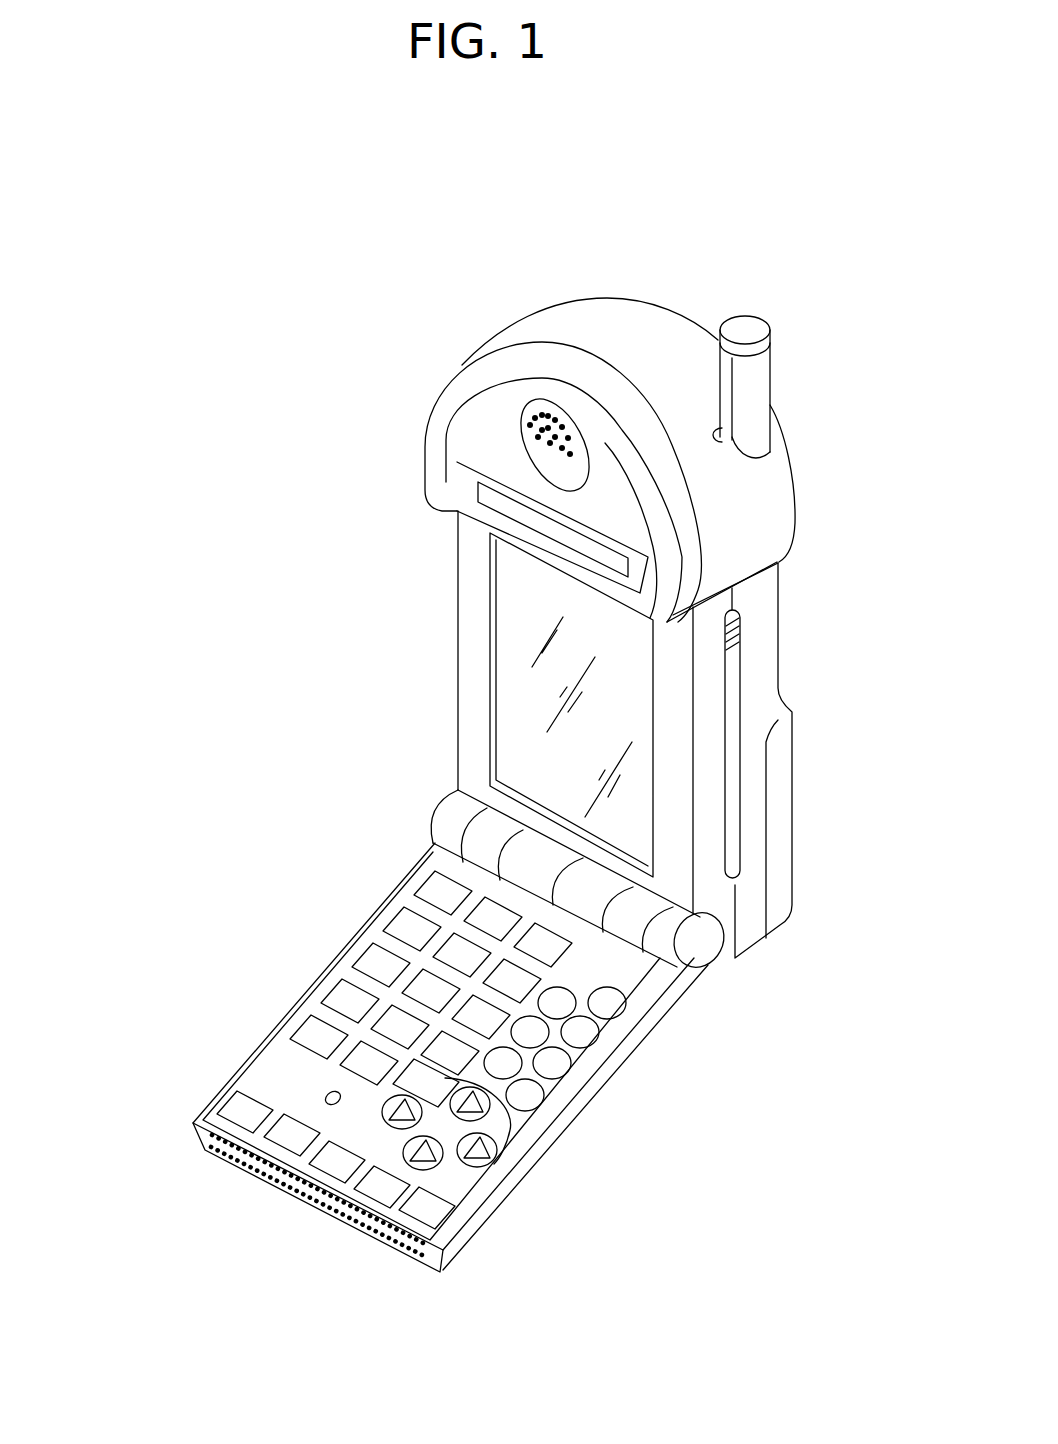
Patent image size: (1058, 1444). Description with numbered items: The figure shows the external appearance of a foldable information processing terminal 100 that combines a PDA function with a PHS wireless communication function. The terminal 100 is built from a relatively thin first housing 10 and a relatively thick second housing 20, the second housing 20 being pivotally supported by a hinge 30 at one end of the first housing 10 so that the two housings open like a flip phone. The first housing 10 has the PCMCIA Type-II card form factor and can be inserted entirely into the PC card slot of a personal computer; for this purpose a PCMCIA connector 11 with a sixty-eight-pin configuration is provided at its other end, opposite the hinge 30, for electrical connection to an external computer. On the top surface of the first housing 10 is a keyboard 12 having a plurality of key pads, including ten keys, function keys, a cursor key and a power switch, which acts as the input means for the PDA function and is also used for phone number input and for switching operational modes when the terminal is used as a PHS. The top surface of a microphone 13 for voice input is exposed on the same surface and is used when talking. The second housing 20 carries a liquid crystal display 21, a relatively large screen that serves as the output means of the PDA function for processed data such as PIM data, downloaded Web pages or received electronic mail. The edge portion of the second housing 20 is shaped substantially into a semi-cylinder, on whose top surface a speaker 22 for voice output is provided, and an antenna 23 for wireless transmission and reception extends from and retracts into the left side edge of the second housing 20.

The information processing terminal 100 is at (628, 1107).
The first housing 10 is at (540, 1203).
The PCMCIA connector 11 is at (288, 1183).
The keyboard 12 is at (365, 893).
The microphone 13 is at (325, 1090).
The second housing 20 is at (806, 645).
The liquid crystal display 21 is at (517, 628).
The speaker 22 is at (527, 432).
The antenna 23 is at (740, 328).
The hinge 30 is at (707, 962).